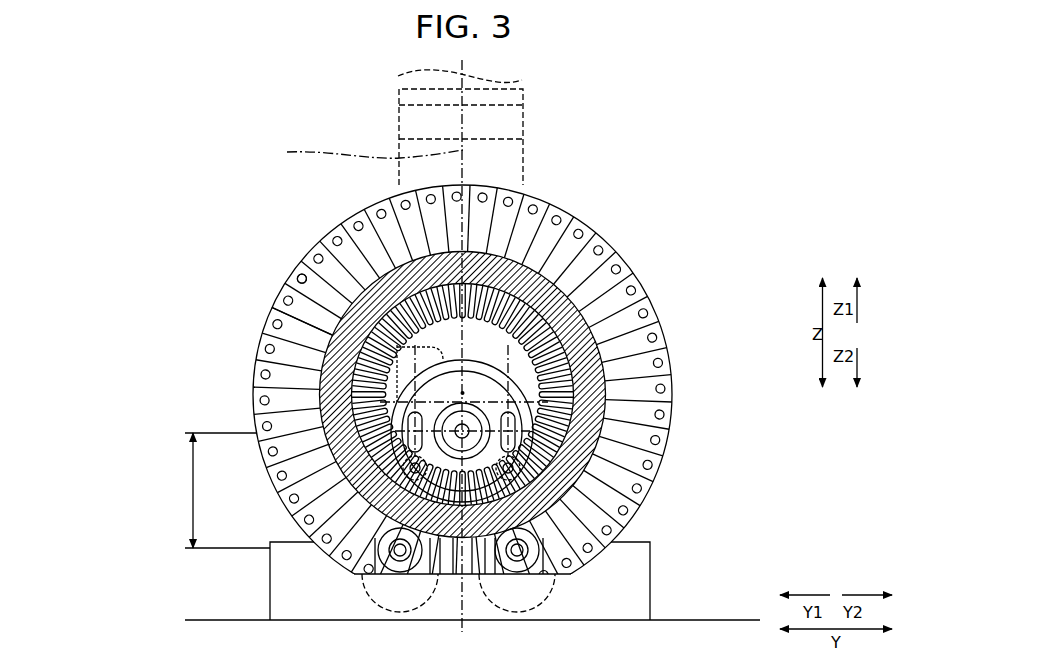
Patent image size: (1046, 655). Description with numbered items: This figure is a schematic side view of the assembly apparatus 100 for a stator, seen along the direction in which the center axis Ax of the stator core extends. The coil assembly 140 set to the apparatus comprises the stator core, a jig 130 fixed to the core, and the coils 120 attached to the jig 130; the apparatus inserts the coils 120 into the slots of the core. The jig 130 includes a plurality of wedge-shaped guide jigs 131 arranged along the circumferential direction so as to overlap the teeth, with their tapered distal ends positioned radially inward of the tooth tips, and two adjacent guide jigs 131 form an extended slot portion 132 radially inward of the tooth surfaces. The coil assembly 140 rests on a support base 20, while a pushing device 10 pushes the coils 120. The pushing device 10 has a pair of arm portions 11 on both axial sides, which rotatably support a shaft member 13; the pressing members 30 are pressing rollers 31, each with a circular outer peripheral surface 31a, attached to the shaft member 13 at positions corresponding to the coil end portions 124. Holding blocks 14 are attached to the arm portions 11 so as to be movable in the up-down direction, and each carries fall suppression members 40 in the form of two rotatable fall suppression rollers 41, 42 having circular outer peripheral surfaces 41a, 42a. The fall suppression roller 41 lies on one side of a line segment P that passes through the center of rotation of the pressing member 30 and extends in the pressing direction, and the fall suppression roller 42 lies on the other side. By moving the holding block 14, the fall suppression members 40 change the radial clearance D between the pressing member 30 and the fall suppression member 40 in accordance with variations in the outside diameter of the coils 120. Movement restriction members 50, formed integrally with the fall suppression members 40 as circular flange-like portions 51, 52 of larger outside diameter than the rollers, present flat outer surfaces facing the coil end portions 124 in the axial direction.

The assembly apparatus 100 is at (679, 160).
The pushing device 10 is at (534, 131).
The arm portions 11 is at (527, 160).
The line segment P is at (368, 156).
The coil assembly 140 is at (392, 393).
The jig 130 is at (392, 395).
The guide jigs 131 is at (300, 276).
The extended slot portion 132 is at (280, 313).
The coils 120 is at (571, 280).
The coil end portions 124 is at (558, 390).
The holding blocks 14 is at (598, 490).
The center axis Ax is at (465, 392).
The pressing members 30 is at (409, 369).
The pressing rollers 31 is at (319, 415).
The outer peripheral surface 31a is at (397, 347).
The shaft member 13 is at (463, 431).
The clearance D is at (221, 490).
The support base 20 is at (650, 595).
The fall suppression members 40 is at (455, 558).
The fall suppression roller 41 is at (366, 574).
The fall suppression roller 42 is at (555, 550).
The outer peripheral surface 41a is at (379, 562).
The outer peripheral surface 42a is at (540, 544).
The movement restriction members 50 is at (455, 589).
The flange-like portion 51 is at (380, 607).
The flange-like portion 52 is at (553, 592).